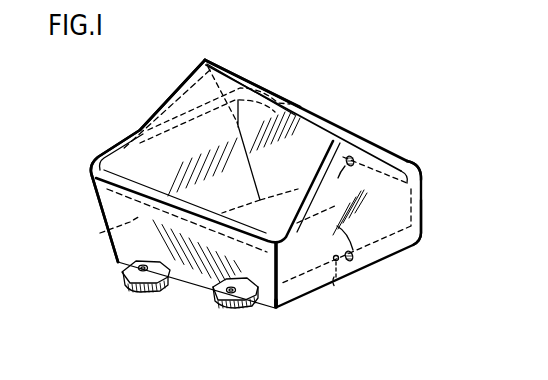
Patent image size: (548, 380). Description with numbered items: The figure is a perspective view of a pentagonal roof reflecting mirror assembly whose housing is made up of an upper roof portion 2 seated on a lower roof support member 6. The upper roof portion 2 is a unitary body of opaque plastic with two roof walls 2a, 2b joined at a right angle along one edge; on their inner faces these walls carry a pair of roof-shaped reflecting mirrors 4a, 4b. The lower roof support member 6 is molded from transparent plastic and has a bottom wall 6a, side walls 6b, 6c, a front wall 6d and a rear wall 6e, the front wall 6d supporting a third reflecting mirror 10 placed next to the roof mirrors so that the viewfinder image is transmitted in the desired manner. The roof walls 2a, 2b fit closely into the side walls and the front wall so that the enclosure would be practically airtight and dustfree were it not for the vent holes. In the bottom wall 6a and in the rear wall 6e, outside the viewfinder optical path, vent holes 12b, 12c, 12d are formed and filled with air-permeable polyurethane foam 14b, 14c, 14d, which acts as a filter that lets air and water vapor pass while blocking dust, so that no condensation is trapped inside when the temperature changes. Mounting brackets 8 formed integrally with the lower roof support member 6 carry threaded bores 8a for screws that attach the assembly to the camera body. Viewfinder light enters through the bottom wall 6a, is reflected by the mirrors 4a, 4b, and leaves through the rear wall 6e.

The upper roof portion 2 is at (195, 99).
The roof wall 2a is at (178, 107).
The roof wall 2b is at (240, 76).
The reflecting mirror 4a is at (140, 123).
The reflecting mirror 4b is at (290, 103).
The lower roof support member 6 is at (182, 290).
The bottom wall 6a is at (289, 306).
The side wall 6b is at (407, 166).
The side wall 6c is at (96, 195).
The front wall 6d is at (105, 154).
The rear wall 6e is at (395, 216).
The mounting bracket 8 is at (130, 284).
The threaded bore 8a is at (138, 268).
The third reflecting mirror 10 is at (100, 233).
The vent hole 12b is at (334, 280).
The vent hole 12c is at (354, 157).
The vent hole 12d is at (355, 256).
The foam material 14b is at (332, 260).
The foam material 14c is at (346, 188).
The foam material 14d is at (326, 235).